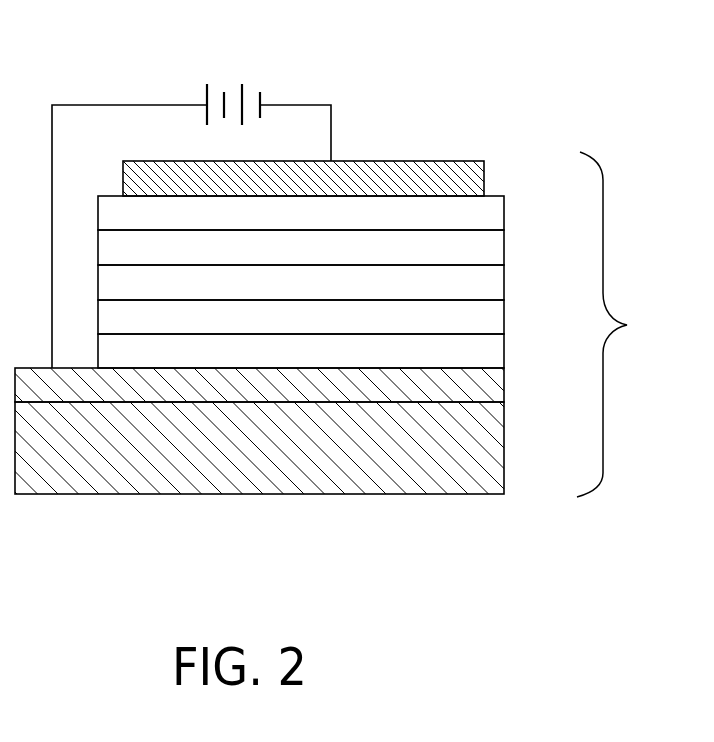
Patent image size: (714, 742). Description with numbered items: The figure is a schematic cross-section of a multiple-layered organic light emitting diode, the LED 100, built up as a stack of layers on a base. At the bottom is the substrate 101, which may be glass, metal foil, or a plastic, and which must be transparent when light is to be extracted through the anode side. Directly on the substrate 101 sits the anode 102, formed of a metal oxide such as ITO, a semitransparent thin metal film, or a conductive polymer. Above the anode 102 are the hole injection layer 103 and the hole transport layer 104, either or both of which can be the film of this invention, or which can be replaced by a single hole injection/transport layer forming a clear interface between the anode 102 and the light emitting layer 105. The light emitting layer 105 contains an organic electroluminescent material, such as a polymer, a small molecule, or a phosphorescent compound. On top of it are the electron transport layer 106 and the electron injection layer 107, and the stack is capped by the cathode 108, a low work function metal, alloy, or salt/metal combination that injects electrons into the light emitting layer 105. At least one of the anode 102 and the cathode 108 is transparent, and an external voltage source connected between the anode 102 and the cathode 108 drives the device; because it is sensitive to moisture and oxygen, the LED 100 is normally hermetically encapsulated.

The LED 100 is at (627, 324).
The substrate 101 is at (295, 448).
The anode 102 is at (268, 385).
The hole injection layer 103 is at (301, 351).
The hole transport layer 104 is at (301, 317).
The light emitting layer 105 is at (301, 282).
The electron transport layer 106 is at (301, 247).
The electron injection layer 107 is at (301, 213).
The cathode 108 is at (305, 178).